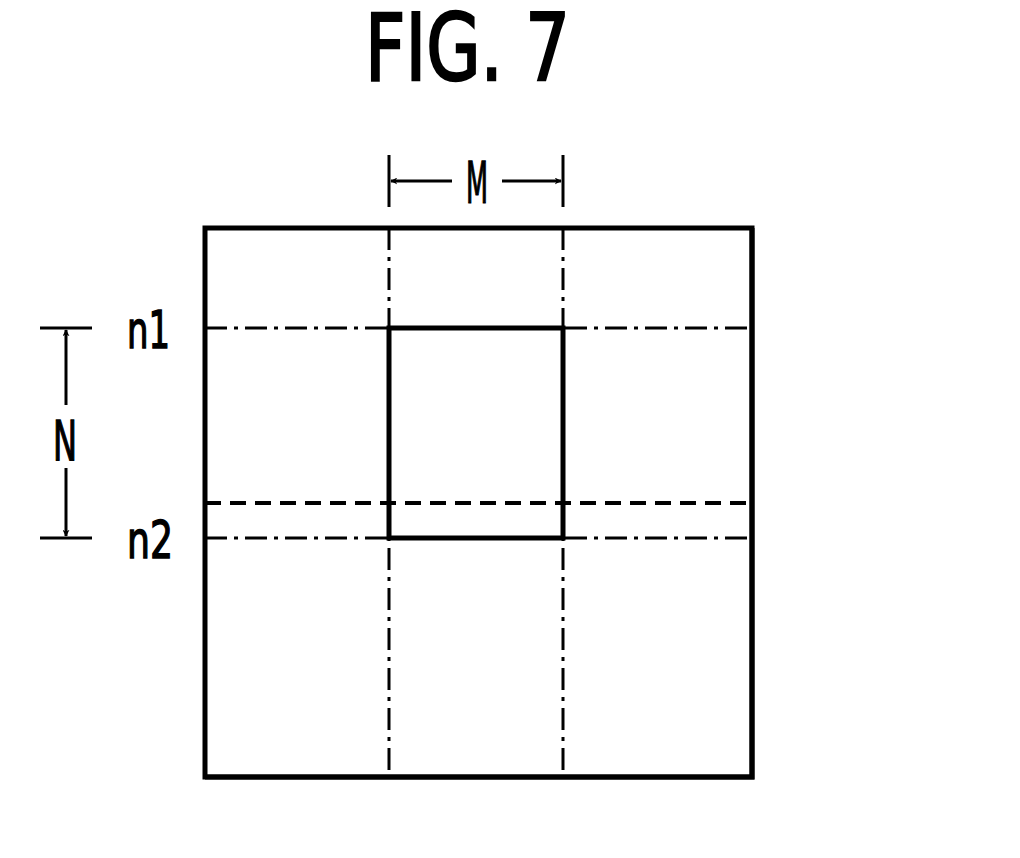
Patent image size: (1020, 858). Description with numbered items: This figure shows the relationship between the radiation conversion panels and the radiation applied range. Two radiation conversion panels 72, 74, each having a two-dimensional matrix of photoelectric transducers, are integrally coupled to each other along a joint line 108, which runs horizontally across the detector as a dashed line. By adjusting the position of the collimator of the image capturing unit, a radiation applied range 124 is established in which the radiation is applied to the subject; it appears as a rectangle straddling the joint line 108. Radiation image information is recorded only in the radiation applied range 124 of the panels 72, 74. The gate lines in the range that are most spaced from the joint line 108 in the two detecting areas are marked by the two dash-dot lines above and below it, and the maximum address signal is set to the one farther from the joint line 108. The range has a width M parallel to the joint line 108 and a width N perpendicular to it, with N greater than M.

The radiation conversion panel 72 is at (756, 288).
The radiation conversion panel 74 is at (756, 717).
The radiation applied range 124 is at (426, 328).
The joint line 108 is at (700, 503).